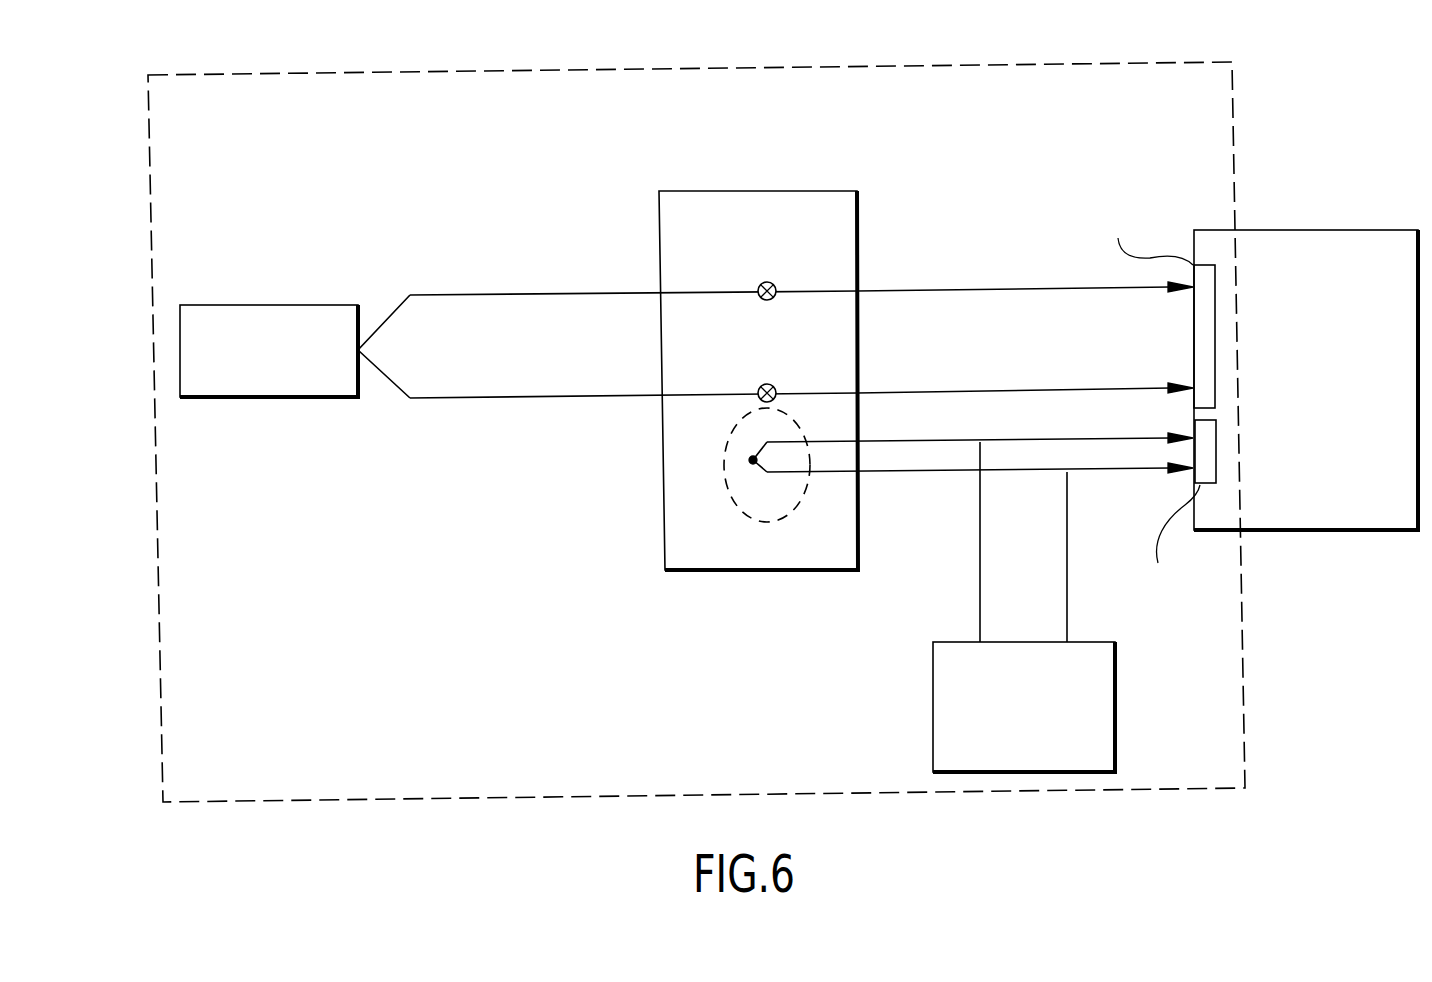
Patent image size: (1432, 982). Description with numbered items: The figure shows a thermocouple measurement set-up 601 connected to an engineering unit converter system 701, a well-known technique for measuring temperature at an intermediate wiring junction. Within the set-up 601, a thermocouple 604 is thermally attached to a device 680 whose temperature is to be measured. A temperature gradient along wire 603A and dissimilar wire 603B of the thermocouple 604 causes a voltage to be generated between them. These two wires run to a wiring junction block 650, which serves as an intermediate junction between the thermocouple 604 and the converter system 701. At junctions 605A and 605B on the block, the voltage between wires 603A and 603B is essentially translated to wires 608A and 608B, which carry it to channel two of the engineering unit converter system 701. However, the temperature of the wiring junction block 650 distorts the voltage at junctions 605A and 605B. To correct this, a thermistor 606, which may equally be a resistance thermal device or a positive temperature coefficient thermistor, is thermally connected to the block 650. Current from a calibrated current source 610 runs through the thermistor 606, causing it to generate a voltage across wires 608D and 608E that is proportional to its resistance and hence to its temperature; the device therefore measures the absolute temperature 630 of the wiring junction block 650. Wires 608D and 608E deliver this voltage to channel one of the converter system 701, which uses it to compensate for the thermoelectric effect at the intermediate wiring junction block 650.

The thermocouple measurement set-up 601 is at (728, 68).
The device 680 is at (297, 303).
The thermocouple 604 is at (373, 296).
The wire 603A is at (602, 292).
The dissimilar wire 603B is at (608, 396).
The junction 605A is at (777, 289).
The junction 605B is at (777, 391).
The wiring junction block 650 is at (762, 190).
The absolute temperature 630 is at (868, 334).
The thermistor 606 is at (725, 477).
The wire 608A is at (975, 286).
The wire 608B is at (975, 391).
The wire 608D is at (1007, 440).
The wire 608E is at (962, 470).
The calibrated current source 610 is at (933, 726).
The engineering unit converter system 701 is at (1355, 532).